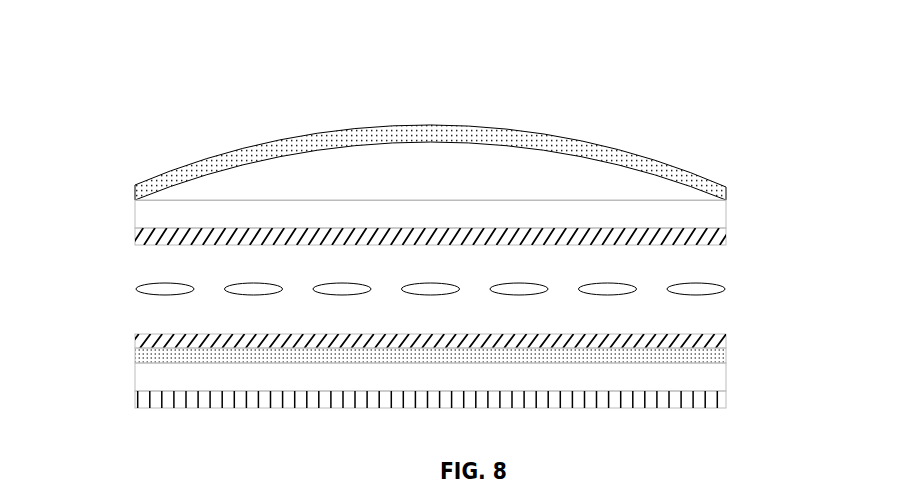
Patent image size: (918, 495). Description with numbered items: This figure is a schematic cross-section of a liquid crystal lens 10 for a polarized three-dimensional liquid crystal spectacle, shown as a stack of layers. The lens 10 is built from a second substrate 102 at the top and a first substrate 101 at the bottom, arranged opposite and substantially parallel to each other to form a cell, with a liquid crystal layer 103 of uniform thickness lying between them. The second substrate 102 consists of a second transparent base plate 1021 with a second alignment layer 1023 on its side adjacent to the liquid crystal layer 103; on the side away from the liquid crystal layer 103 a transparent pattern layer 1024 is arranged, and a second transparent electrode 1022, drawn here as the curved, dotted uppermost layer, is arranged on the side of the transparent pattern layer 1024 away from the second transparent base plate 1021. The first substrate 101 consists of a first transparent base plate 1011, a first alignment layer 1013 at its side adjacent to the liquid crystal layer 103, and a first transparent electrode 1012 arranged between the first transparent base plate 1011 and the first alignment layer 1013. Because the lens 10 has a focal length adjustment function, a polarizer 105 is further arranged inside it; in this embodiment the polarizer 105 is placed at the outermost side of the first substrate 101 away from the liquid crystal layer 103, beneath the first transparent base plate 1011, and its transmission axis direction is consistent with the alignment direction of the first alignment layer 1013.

The liquid crystal lens 10 is at (413, 95).
The second substrate 102 is at (510, 187).
The second transparent electrode 1022 is at (703, 175).
The transparent pattern layer 1024 is at (692, 195).
The second transparent base plate 1021 is at (726, 217).
The second alignment layer 1023 is at (726, 238).
The liquid crystal layer 103 is at (703, 288).
The first substrate 101 is at (508, 359).
The first alignment layer 1013 is at (726, 337).
The first transparent electrode 1012 is at (726, 359).
The first transparent base plate 1011 is at (726, 382).
The polarizer 105 is at (135, 398).